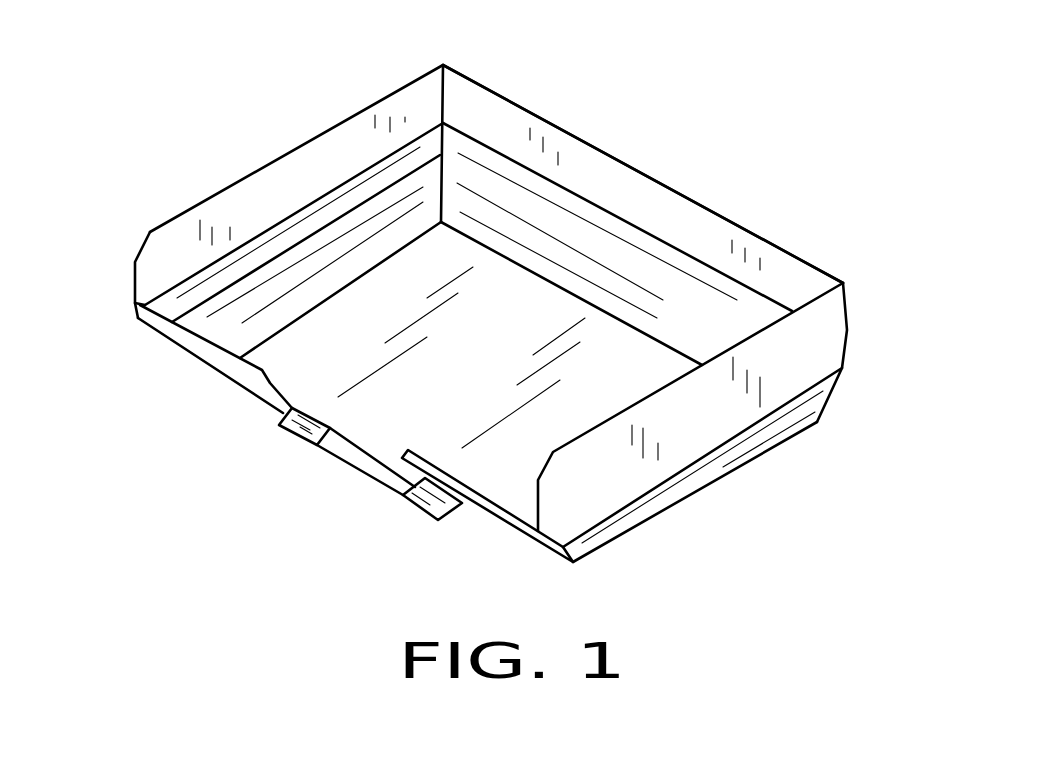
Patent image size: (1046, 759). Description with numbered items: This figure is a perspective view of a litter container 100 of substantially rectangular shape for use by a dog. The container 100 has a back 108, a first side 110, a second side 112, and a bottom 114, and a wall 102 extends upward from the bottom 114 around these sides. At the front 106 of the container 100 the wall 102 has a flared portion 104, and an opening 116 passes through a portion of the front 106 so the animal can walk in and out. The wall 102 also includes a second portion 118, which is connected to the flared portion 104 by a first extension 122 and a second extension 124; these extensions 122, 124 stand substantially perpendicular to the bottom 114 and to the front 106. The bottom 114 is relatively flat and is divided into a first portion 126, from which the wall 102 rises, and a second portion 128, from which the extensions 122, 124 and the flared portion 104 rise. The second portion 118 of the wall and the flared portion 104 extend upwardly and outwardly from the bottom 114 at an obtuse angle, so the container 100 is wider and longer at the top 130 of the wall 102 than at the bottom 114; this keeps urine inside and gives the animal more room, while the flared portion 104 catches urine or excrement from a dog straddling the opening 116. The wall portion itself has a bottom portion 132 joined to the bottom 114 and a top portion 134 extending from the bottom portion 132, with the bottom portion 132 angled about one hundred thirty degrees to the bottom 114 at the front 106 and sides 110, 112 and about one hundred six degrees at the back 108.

The litter container 100 is at (210, 175).
The wall 102 is at (845, 283).
The flared portion 104 is at (303, 445).
The front 106 is at (232, 357).
The back 108 is at (648, 176).
The first side 110 is at (158, 227).
The second side 112 is at (737, 410).
The bottom 114 is at (650, 367).
The opening 116 is at (385, 432).
The second portion 118 is at (302, 146).
The first extension 122 is at (283, 412).
The second extension 124 is at (453, 507).
The first portion 126 is at (437, 267).
The second portion 128 is at (340, 443).
The top 130 is at (513, 104).
The bottom portion 132 is at (692, 486).
The top portion 134 is at (607, 457).